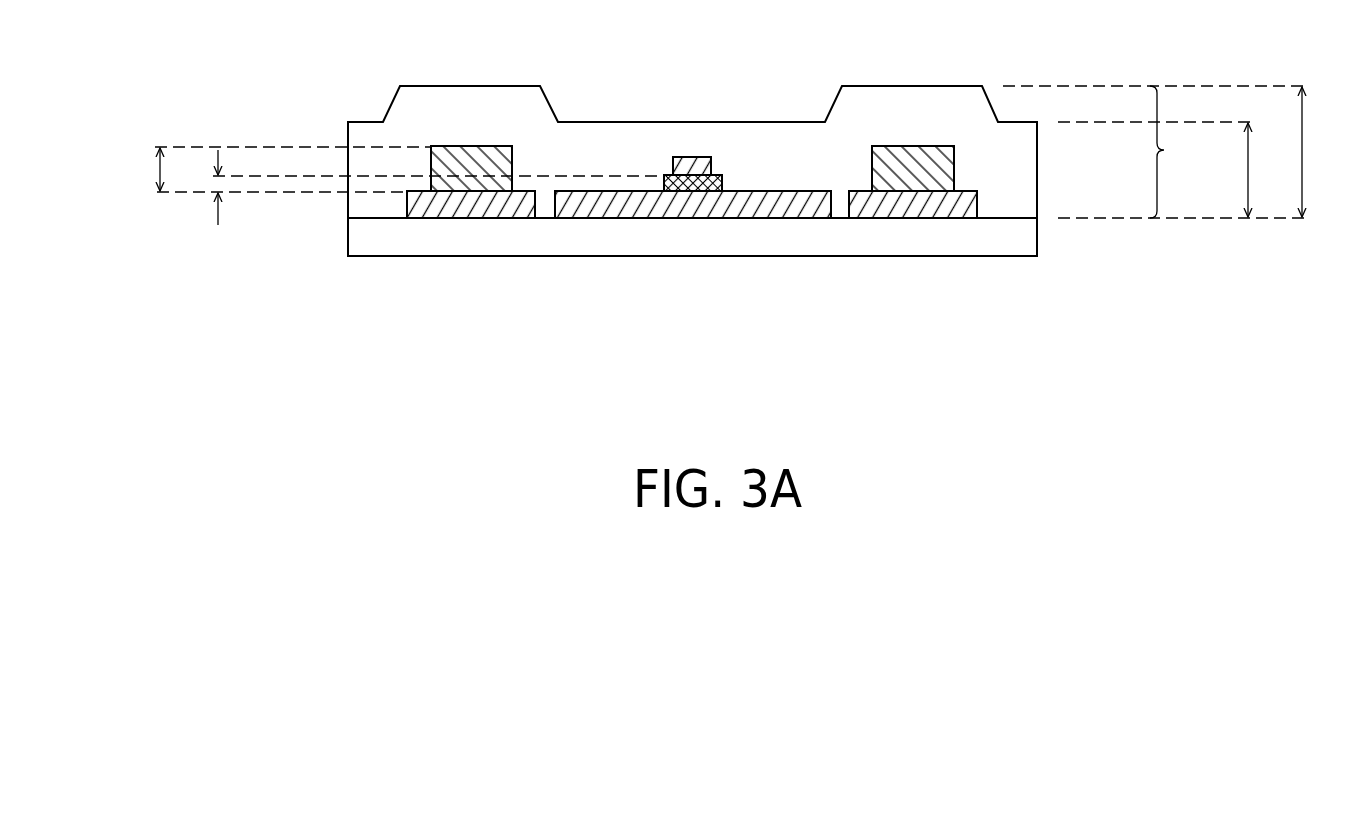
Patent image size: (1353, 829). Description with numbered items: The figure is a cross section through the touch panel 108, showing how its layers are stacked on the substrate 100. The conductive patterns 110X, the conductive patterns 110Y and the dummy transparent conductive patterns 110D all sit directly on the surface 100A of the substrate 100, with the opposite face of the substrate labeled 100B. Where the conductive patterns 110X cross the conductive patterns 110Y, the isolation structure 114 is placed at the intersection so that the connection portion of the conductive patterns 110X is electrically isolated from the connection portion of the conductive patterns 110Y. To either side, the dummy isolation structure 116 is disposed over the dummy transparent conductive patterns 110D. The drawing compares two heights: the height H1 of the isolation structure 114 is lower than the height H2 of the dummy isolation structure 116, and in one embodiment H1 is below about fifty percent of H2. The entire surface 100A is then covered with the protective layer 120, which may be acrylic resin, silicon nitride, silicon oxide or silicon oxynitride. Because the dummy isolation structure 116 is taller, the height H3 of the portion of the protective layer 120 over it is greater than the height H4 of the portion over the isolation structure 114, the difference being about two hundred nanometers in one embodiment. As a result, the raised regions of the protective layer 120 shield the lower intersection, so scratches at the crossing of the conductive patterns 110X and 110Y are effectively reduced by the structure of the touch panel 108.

The substrate 100 is at (1022, 238).
The surface of the substrate 100A is at (1006, 216).
The bottom surface of substrate 100B is at (1006, 259).
The touch panel 108 is at (1184, 152).
The dummy transparent conductive patterns 110D is at (478, 200).
The conductive patterns 110X is at (695, 157).
The conductive patterns 110Y is at (692, 200).
The isolation structure 114 is at (724, 175).
The dummy isolation structure 116 is at (483, 150).
The protective layer 120 is at (1022, 160).
The height of the isolation structure H1 is at (217, 183).
The height of the dummy isolation structure H2 is at (138, 169).
The height of the protective layer over the dummy isolation structure H3 is at (1326, 152).
The height of the protective layer over the isolation structure H4 is at (1270, 170).